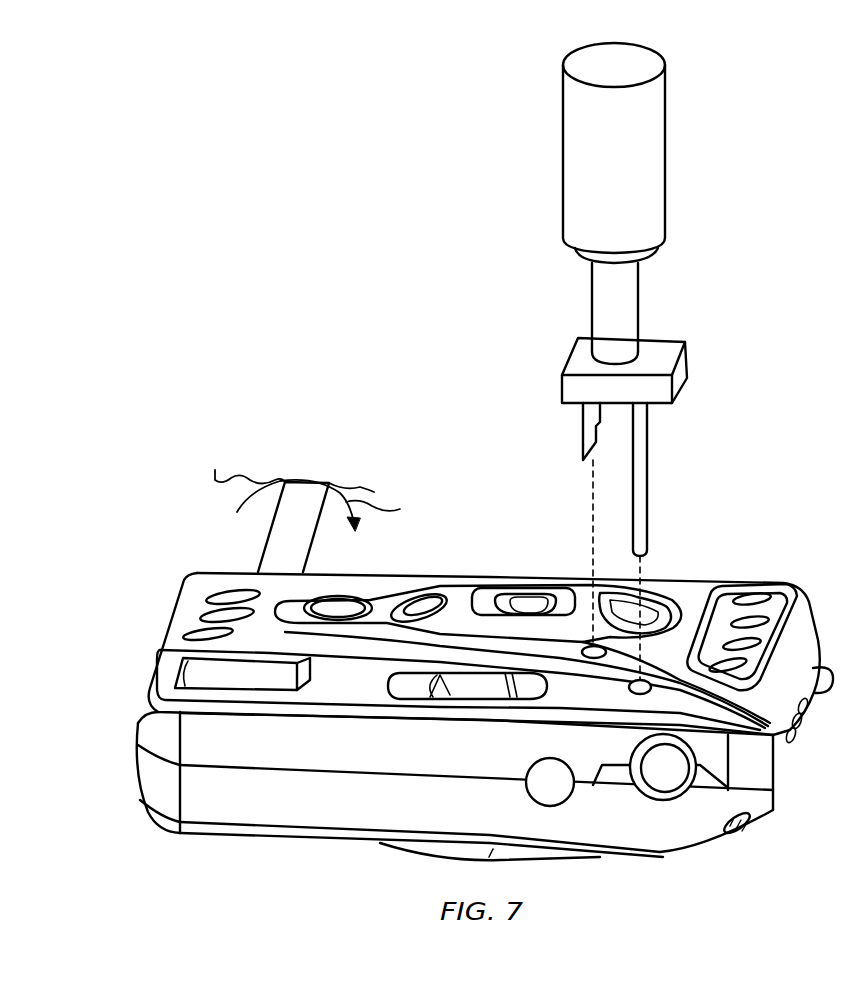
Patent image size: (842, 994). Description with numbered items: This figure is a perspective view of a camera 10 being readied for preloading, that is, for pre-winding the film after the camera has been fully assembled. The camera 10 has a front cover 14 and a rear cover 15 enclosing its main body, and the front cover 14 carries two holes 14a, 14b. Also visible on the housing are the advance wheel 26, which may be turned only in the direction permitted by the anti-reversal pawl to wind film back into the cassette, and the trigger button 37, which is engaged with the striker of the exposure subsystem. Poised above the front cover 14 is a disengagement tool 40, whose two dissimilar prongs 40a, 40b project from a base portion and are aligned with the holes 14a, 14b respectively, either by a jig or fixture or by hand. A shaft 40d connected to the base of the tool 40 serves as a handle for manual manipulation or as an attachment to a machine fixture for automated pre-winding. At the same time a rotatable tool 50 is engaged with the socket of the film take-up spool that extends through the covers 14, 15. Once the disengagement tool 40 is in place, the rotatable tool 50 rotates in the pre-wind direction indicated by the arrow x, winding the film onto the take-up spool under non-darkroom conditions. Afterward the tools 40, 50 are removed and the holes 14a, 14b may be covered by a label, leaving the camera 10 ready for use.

The camera 10 is at (158, 621).
The front cover 14 is at (705, 593).
The hole through the front cover 14a is at (588, 645).
The hole through the front cover 14b is at (648, 681).
The rear cover 15 is at (190, 835).
The advance wheel 26 is at (750, 830).
The trigger button 37 is at (678, 785).
The disengagement tool 40 is at (692, 226).
The prong 40a is at (583, 431).
The prong 40b is at (647, 460).
The shaft 40d is at (650, 166).
The rotatable tool 50 is at (267, 538).